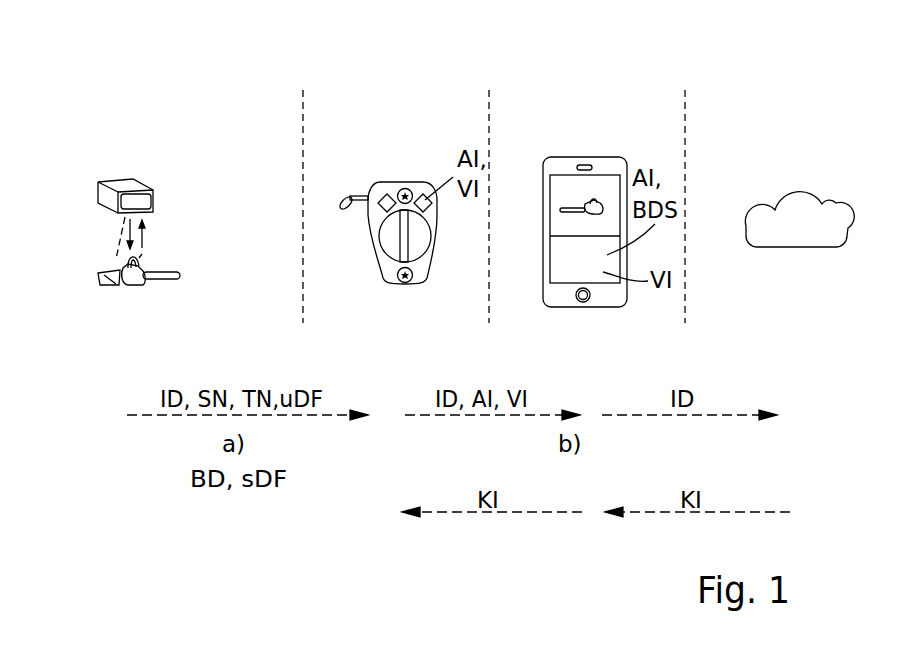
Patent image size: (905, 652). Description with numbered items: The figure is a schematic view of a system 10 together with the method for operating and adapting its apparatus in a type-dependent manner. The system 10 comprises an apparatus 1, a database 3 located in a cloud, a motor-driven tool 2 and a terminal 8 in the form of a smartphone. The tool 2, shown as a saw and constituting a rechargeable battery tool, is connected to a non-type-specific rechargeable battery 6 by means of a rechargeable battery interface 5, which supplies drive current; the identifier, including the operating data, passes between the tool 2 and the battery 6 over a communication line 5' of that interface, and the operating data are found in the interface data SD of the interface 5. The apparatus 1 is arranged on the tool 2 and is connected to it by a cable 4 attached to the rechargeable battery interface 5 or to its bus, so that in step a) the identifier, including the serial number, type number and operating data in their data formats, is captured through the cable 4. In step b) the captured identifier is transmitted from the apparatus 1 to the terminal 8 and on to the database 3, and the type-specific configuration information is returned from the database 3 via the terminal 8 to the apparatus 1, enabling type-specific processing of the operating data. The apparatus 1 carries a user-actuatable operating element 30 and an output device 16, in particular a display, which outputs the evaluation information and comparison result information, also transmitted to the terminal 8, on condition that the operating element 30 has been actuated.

The system 10 is at (136, 73).
The rechargeable battery 6 is at (125, 186).
The communication line 5' is at (93, 238).
The rechargeable battery interface 5 is at (170, 233).
The interface data SD is at (117, 256).
The motor-driven tool 2 is at (134, 279).
The apparatus 1 is at (405, 190).
The user-actuatable operating element 30 is at (388, 195).
The output device 16 is at (423, 197).
The cable 4 is at (362, 196).
The terminal 8 is at (603, 165).
The database 3 is at (793, 202).